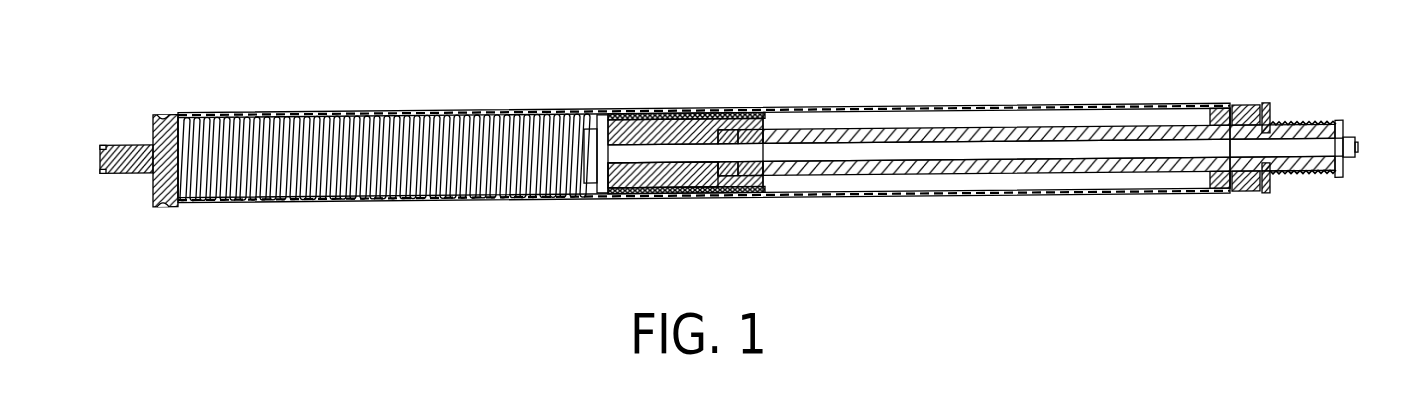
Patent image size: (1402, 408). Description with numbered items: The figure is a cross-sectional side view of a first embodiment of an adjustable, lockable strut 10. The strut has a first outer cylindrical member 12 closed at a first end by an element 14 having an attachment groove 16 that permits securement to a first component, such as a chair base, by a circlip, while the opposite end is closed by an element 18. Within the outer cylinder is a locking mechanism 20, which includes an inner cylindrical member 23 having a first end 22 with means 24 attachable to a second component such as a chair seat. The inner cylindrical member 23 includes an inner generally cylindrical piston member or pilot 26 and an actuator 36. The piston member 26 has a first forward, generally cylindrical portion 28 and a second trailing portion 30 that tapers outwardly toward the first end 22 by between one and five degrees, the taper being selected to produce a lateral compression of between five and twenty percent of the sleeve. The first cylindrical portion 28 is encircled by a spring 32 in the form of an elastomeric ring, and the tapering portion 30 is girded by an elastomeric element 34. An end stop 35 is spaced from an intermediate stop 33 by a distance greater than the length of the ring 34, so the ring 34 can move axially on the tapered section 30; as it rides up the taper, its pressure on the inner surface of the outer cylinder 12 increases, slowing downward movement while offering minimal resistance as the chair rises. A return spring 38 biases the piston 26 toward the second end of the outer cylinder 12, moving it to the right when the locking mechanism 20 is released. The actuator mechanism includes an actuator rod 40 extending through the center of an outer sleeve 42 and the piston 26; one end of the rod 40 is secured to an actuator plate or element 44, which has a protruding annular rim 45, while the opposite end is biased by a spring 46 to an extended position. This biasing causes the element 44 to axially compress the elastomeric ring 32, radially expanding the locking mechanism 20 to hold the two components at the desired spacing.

The adjustable, lockable strut 10 is at (1043, 97).
The first outer cylindrical member 12 is at (290, 112).
The closing element 14 is at (143, 120).
The attachment groove 16 is at (104, 175).
The closing element 18 is at (1225, 105).
The locking mechanism 20 is at (687, 100).
The first end 22 is at (1357, 147).
The inner cylindrical member 23 is at (836, 124).
The attachment means 24 is at (1245, 105).
The piston member 26 is at (782, 100).
The first forward cylindrical portion 28 is at (613, 112).
The second trailing portion 30 is at (723, 110).
The spring 32 is at (635, 200).
The intermediate stop 33 is at (675, 200).
The elastomeric element 34 is at (730, 200).
The end stop 35 is at (763, 200).
The actuator 36 is at (1277, 170).
The return spring 38 is at (422, 120).
The actuator rod 40 is at (935, 130).
The outer sleeve 42 is at (1008, 178).
The actuator element 44 is at (607, 200).
The protruding annular rim 45 is at (620, 198).
The spring 46 is at (1295, 125).